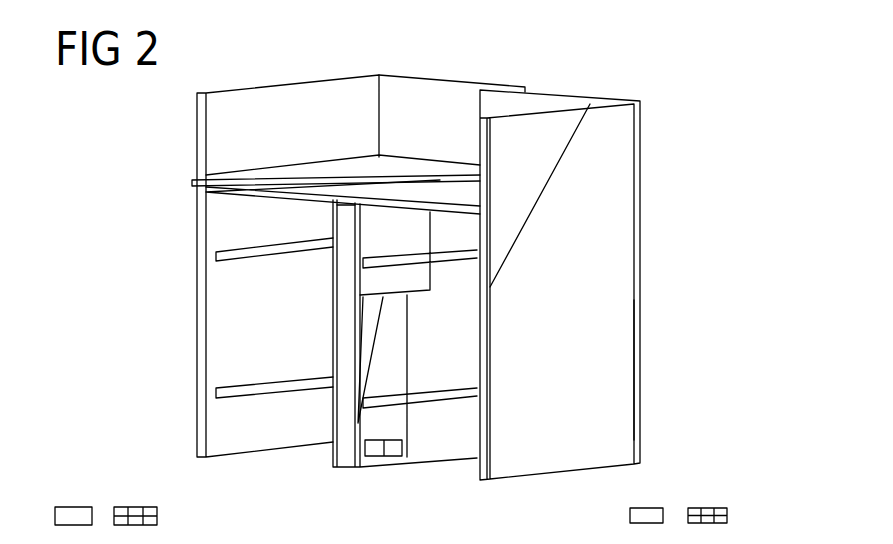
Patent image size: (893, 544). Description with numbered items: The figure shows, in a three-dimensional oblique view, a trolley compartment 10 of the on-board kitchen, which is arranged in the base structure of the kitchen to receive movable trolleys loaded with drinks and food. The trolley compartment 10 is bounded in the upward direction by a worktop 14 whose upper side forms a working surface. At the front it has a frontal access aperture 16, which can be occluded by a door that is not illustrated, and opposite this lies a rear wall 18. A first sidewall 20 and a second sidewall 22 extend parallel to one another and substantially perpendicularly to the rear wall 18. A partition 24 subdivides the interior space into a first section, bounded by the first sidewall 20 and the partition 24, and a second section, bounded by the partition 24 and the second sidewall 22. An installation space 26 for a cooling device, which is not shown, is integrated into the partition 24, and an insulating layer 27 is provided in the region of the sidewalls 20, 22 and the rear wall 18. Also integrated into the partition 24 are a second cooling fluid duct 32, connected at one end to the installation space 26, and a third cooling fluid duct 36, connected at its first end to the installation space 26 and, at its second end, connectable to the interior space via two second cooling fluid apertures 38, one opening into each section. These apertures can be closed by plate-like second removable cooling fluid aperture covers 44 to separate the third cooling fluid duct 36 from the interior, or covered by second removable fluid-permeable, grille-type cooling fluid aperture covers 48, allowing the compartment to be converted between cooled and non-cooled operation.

The trolley compartment 10 is at (438, 295).
The worktop 14 is at (392, 160).
The frontal access aperture 16 is at (217, 352).
The rear wall 18 is at (643, 256).
The first sidewall 20 is at (218, 230).
The second sidewall 22 is at (618, 375).
The partition 24 is at (345, 463).
The installation space 26 is at (403, 280).
The insulating layer 27 is at (512, 232).
The second cooling fluid duct 32 is at (370, 236).
The third cooling fluid duct 36 is at (400, 413).
The second cooling fluid aperture 38 is at (399, 456).
The second removable cooling fluid aperture cover 44 is at (73, 507).
The second removable fluid-permeable, grille-type cooling fluid aperture cover 48 is at (137, 507).